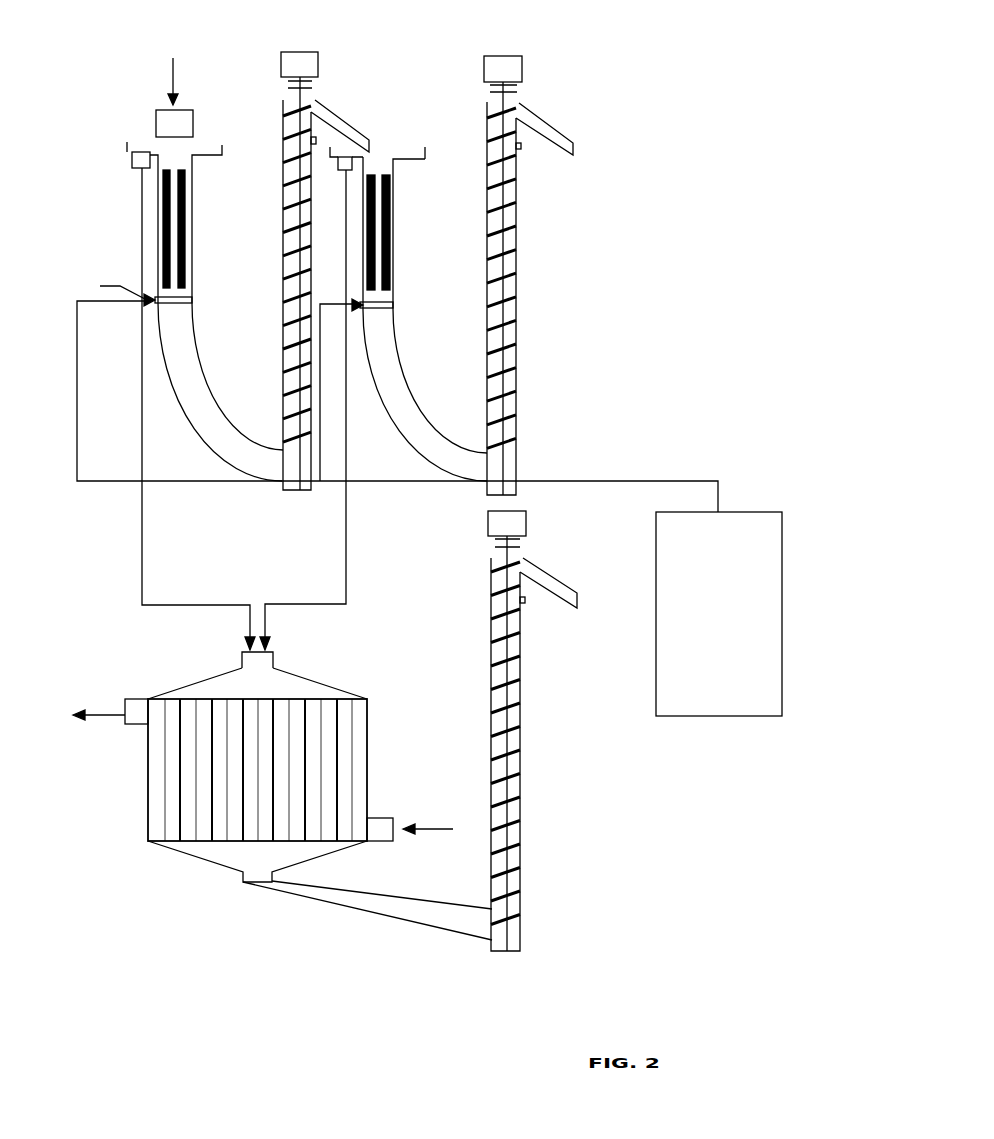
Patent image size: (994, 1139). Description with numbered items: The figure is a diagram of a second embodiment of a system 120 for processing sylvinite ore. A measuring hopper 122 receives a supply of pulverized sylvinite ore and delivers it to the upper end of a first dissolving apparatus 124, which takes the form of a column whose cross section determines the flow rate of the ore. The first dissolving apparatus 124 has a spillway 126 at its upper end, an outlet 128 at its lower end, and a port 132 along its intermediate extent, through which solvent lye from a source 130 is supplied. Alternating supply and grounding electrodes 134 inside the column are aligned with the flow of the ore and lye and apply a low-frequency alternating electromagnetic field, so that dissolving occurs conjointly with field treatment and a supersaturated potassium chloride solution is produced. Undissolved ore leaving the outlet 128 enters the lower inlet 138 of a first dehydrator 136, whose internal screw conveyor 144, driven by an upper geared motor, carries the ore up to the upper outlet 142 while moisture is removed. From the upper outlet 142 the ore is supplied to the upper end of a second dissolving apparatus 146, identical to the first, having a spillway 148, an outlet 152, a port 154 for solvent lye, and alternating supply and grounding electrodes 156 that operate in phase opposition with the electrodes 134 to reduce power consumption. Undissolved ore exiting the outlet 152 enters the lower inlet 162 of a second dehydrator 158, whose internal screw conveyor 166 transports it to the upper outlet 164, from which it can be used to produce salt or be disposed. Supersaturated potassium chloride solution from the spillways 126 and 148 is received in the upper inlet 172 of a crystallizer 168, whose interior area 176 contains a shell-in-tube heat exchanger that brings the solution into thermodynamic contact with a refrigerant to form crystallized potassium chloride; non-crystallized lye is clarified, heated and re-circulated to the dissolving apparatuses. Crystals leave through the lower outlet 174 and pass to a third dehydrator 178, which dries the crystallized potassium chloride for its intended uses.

The system 120 is at (598, 107).
The measuring hopper 122 is at (193, 110).
The first dissolving apparatus 124 is at (192, 252).
The spillway 126 is at (132, 152).
The outlet 128 is at (273, 481).
The source 130 is at (770, 512).
The port 132 is at (390, 391).
The alternating supply and grounding electrodes 134 is at (178, 208).
The first dehydrator 136 is at (280, 163).
The lower inlet 138 is at (282, 443).
The upper outlet 142 is at (315, 100).
The internal screw conveyor 144 is at (298, 295).
The second dissolving apparatus 146 is at (395, 258).
The spillway 148 is at (413, 158).
The outlet 152 is at (487, 487).
The port 154 is at (363, 308).
The alternating supply and grounding electrodes 156 is at (375, 180).
The second dehydrator 158 is at (507, 176).
The lower inlet 162 is at (487, 450).
The upper outlet 164 is at (519, 103).
The internal screw conveyor 166 is at (490, 292).
The crystallizer 168 is at (212, 677).
The upper inlet 172 is at (273, 652).
The lower outlet 174 is at (242, 873).
The interior area 176 is at (178, 793).
The third dehydrator 178 is at (522, 812).